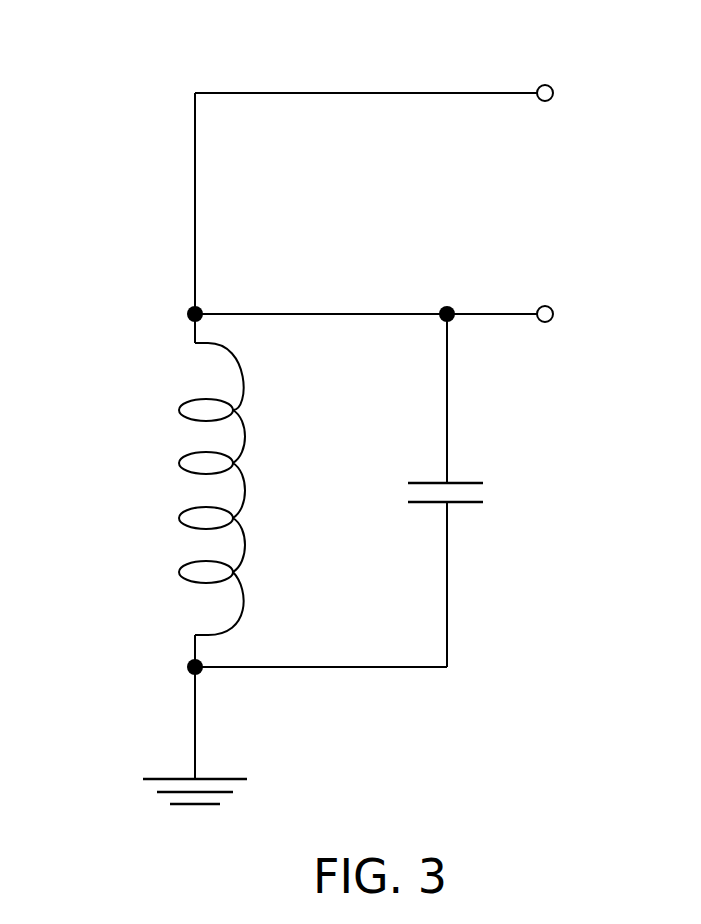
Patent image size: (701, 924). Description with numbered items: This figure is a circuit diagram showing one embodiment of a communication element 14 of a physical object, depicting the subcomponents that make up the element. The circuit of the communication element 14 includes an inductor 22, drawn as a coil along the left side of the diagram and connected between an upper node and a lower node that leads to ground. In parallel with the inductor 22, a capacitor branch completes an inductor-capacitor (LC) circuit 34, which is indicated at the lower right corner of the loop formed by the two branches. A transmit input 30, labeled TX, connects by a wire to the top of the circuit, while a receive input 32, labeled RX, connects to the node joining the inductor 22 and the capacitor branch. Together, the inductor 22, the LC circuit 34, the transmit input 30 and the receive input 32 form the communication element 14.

The communication element 14 is at (94, 90).
The inductor 22 is at (242, 478).
The transmit input 30 is at (575, 110).
The receive input 32 is at (575, 332).
The inductor-capacitor (LC) circuit 34 is at (466, 673).